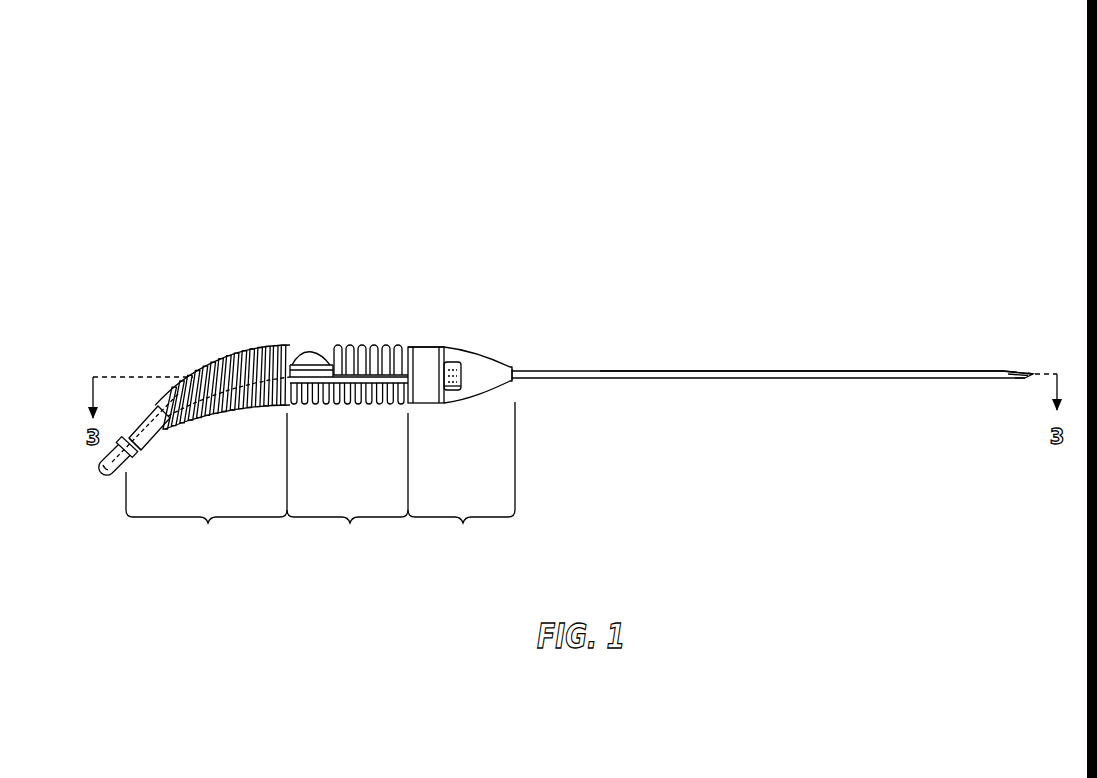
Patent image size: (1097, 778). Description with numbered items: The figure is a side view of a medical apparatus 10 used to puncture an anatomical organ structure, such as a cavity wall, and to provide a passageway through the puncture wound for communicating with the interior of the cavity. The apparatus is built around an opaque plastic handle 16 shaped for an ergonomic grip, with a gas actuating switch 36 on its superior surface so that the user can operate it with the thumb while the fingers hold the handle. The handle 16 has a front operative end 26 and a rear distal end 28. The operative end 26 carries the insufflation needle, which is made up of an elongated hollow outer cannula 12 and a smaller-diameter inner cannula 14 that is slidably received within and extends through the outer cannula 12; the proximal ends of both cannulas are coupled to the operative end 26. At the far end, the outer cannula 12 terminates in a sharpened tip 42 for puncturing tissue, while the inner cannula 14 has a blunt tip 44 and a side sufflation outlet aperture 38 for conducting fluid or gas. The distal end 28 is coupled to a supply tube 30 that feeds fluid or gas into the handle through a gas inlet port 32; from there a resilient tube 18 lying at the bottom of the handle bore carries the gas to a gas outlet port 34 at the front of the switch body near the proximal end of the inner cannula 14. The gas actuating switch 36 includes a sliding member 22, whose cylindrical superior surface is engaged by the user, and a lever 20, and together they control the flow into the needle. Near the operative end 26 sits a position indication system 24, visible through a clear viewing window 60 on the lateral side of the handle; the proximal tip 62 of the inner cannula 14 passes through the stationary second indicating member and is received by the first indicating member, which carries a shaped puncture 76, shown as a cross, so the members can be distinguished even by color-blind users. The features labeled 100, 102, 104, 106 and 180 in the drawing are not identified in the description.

The medical apparatus 10 is at (972, 110).
The outer cannula 12 is at (676, 368).
The inner cannula 14 is at (1030, 382).
The handle 16 is at (236, 347).
The resilient tube 18 is at (156, 444).
The lever 20 is at (310, 348).
The sliding member 22 is at (380, 340).
The position indication system 24 is at (450, 397).
The operative end 26 is at (505, 351).
The distal end 28 is at (153, 456).
The supply tube 30 is at (115, 478).
The gas inlet port 32 is at (137, 470).
The gas outlet port 34 is at (392, 410).
The gas actuating switch 36 is at (358, 275).
The sufflation outlet aperture 38 is at (1018, 365).
The sharpened tip 42 is at (1022, 378).
The blunt tip 44 is at (1033, 374).
The viewing window 60 is at (452, 362).
The proximal tip 62 is at (490, 368).
The shaped puncture 76 is at (453, 390).
The guide member 100 is at (895, 335).
The proximal section 102 is at (461, 478).
The intermediate section 104 is at (347, 483).
The distal section 106 is at (206, 483).
The shaft region 180 is at (797, 322).